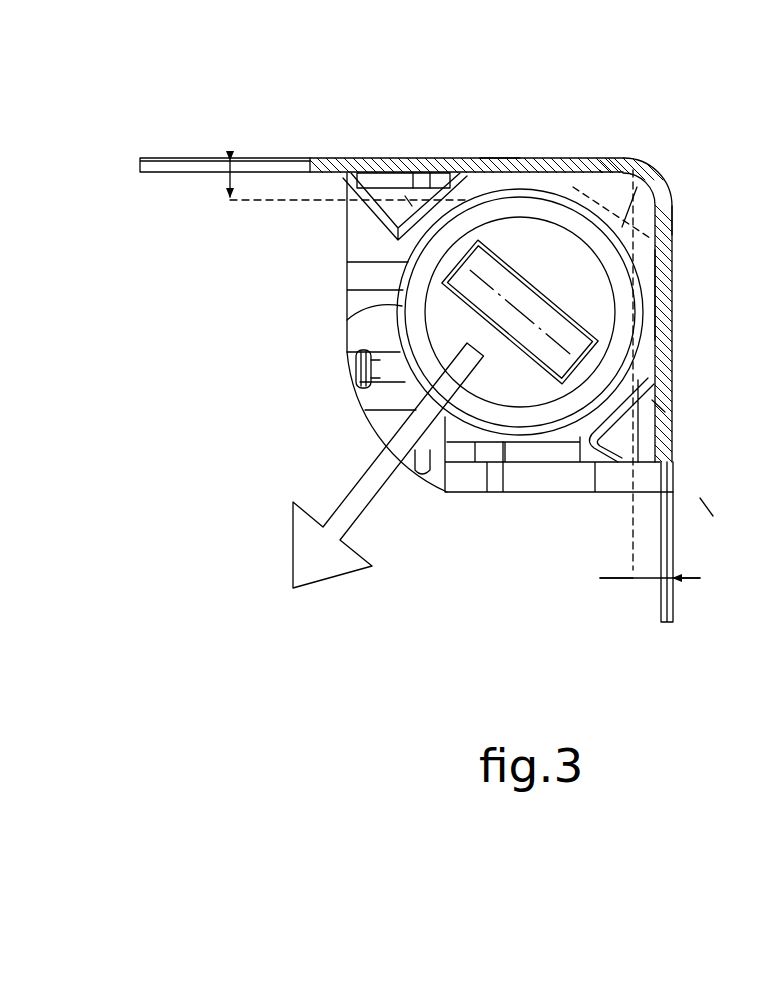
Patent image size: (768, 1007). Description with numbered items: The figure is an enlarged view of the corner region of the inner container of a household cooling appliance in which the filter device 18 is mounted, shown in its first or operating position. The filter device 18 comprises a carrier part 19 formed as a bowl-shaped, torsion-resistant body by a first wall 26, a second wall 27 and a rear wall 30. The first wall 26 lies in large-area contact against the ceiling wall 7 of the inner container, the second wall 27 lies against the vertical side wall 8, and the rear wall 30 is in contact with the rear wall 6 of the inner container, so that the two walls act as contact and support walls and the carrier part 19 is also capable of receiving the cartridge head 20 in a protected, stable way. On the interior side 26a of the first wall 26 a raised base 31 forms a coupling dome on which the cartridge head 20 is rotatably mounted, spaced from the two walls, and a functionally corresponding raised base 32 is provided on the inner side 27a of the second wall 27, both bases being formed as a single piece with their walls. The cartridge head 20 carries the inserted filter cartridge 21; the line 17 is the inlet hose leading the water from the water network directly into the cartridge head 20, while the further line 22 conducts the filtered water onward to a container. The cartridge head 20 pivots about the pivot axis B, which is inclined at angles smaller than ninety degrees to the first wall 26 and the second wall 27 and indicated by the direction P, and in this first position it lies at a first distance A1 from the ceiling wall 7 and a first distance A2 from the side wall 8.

The ceiling wall 7 is at (270, 157).
The first wall 26 is at (447, 157).
The interior side 26a is at (498, 157).
The side wall 8 is at (674, 232).
The second wall 27 is at (674, 330).
The inner side 27a is at (658, 308).
The filter device 18 is at (537, 180).
The filter cartridge 21 is at (572, 265).
The raised base 31 is at (395, 212).
The line 17 is at (362, 270).
The cartridge head 20 is at (353, 318).
The further line 22 is at (357, 377).
The carrier part 19 is at (529, 472).
The rear wall 30 is at (515, 453).
The rear wall 6 is at (552, 482).
The second raised base 32 is at (617, 468).
The direction arrow P is at (370, 490).
The pivot axis B is at (690, 492).
The first distance A1 is at (228, 190).
The first distance A2 is at (645, 580).